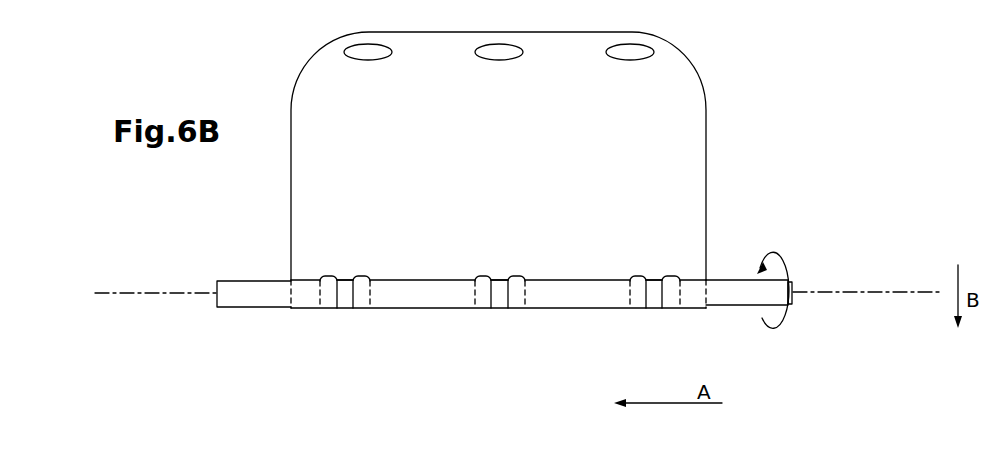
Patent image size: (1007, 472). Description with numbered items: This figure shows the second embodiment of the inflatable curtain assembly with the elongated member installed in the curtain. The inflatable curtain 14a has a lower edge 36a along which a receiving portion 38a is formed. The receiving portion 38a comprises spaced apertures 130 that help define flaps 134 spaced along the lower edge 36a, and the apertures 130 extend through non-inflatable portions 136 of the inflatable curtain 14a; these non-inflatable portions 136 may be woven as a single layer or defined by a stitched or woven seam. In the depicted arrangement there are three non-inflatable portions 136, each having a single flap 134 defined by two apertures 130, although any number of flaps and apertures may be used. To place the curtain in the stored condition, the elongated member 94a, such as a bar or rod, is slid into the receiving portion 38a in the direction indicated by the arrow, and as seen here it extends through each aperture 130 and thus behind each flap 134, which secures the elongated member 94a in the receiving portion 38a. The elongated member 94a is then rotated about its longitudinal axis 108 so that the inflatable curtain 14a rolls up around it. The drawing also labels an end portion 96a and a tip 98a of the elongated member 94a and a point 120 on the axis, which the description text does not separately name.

The inflatable curtain 14a is at (670, 150).
The lower edge 36a is at (570, 309).
The receiving portion 38a is at (464, 347).
The elongated member 94a is at (722, 296).
The shaft end portion 96a is at (216, 288).
The shaft tip 98a is at (792, 288).
The longitudinal axis 108 is at (880, 293).
The axis point 120 is at (847, 293).
The apertures 130 is at (330, 309).
The flaps 134 is at (347, 308).
The non-inflatable portions 136 is at (487, 309).